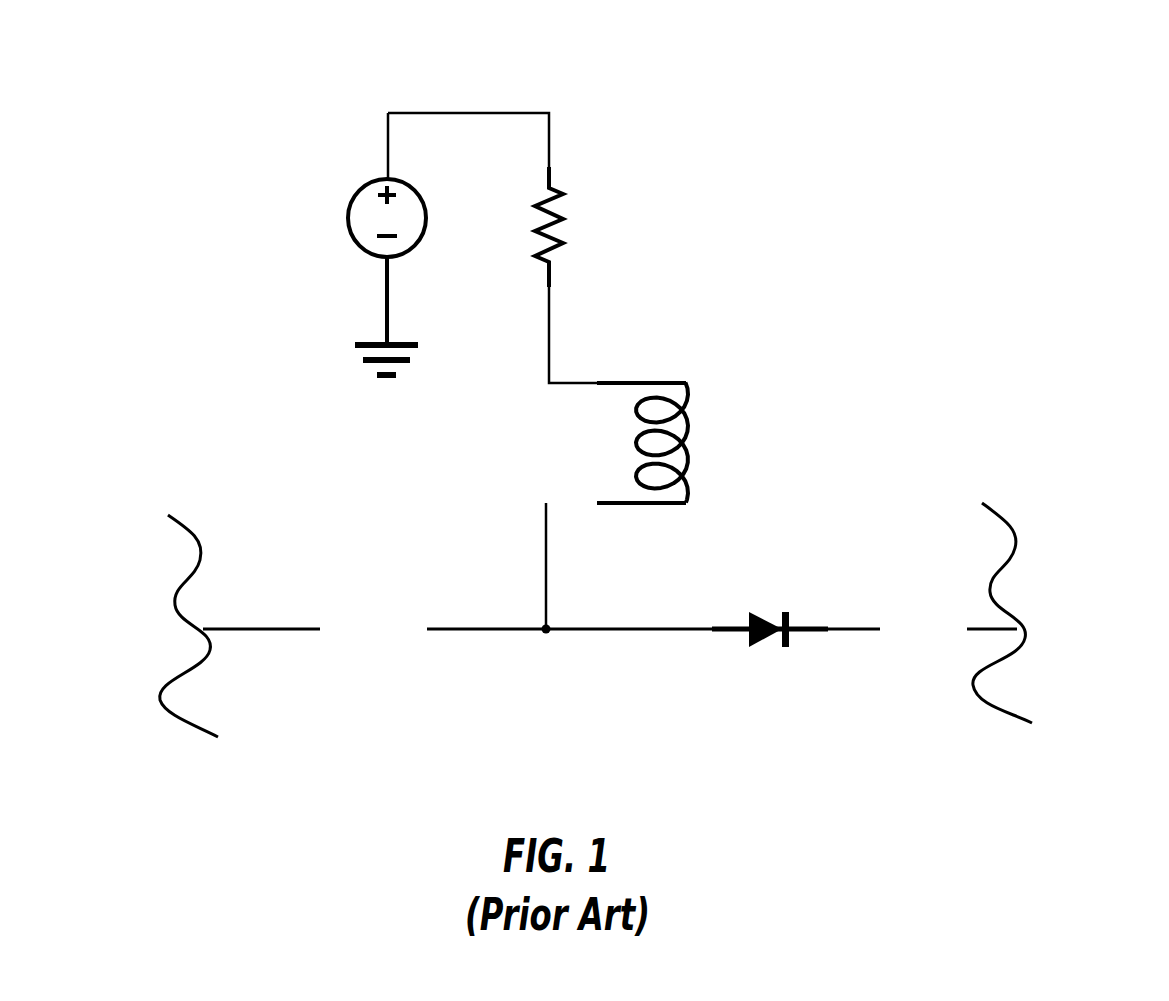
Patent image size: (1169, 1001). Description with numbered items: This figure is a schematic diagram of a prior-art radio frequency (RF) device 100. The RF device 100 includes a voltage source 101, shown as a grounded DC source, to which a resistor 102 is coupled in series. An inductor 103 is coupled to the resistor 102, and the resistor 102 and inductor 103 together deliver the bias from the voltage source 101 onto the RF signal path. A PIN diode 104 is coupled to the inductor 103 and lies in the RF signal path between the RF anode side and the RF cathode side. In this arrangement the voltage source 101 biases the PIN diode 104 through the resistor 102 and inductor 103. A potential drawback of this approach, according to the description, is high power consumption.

The radio frequency (RF) device 100 is at (1012, 180).
The voltage source 101 is at (352, 200).
The resistor 102 is at (557, 195).
The inductor 103 is at (663, 397).
The PIN diode 104 is at (760, 613).